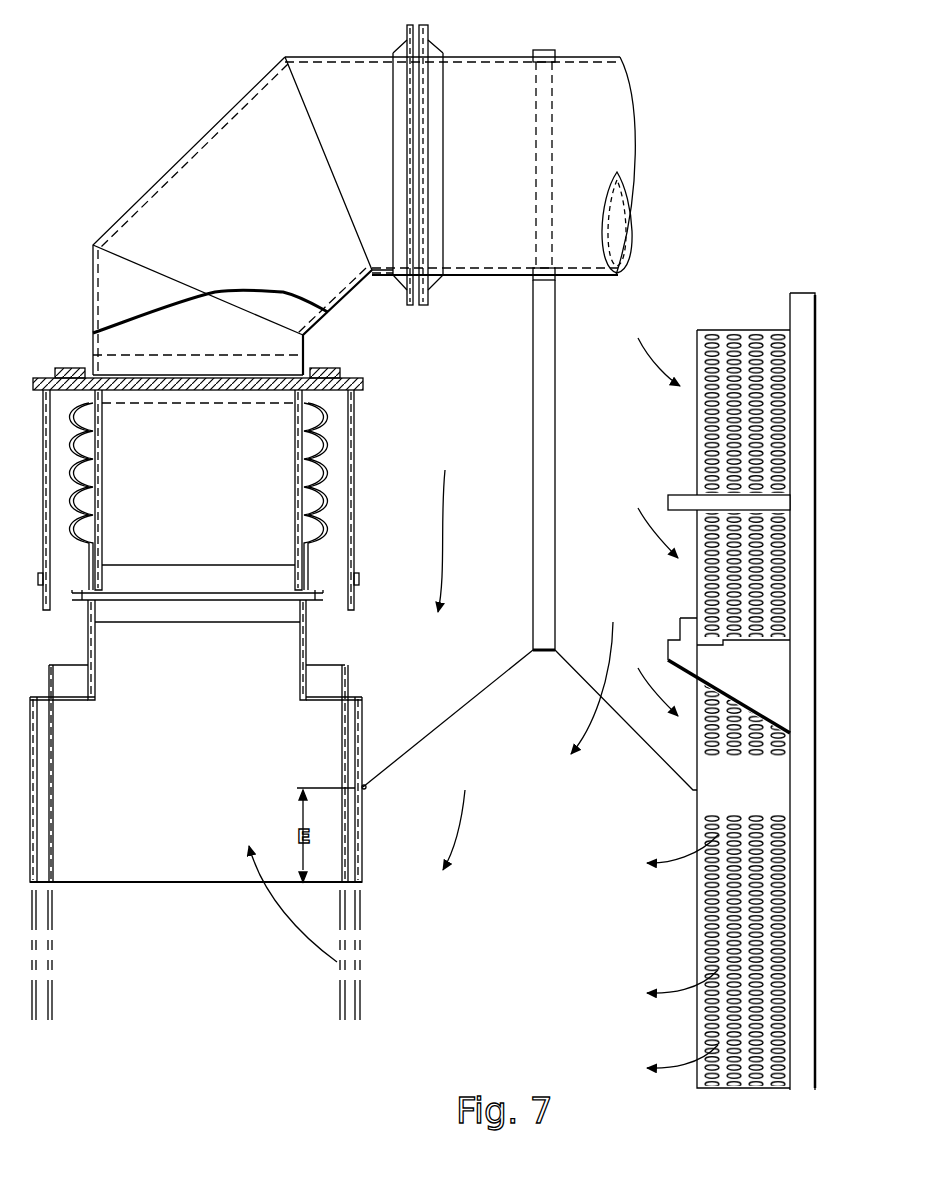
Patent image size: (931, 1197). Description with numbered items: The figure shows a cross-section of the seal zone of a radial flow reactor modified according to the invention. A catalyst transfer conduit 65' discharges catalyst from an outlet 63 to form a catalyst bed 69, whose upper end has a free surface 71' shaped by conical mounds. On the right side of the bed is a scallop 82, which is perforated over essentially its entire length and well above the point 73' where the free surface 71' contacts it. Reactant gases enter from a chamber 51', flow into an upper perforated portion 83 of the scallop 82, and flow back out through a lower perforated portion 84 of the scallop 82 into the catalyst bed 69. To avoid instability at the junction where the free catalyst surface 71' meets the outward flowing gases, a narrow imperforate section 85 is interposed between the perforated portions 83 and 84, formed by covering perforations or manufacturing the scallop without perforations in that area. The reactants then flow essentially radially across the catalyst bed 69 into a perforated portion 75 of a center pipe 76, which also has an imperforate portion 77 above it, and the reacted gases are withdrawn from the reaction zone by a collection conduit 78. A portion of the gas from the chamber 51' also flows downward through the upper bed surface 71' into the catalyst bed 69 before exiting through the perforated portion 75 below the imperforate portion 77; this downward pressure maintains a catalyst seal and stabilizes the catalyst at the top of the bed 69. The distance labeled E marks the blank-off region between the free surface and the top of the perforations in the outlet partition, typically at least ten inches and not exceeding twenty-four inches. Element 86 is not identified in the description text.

The collection conduit 78 is at (460, 58).
The catalyst transfer conduit 65' is at (573, 350).
The outlet 63 is at (556, 647).
The chamber 51' is at (452, 506).
The perforated panel 86 is at (725, 330).
The scallop 82 is at (693, 437).
The upper perforated portion 83 is at (763, 442).
The free surface 71' is at (447, 713).
The point 73' is at (626, 741).
The imperforate section 85 is at (773, 781).
The imperforate portion 77 is at (363, 840).
The center pipe 76 is at (388, 883).
The catalyst bed 69 is at (553, 912).
The perforated portion 75 is at (360, 992).
The lower perforated portion 84 is at (758, 900).